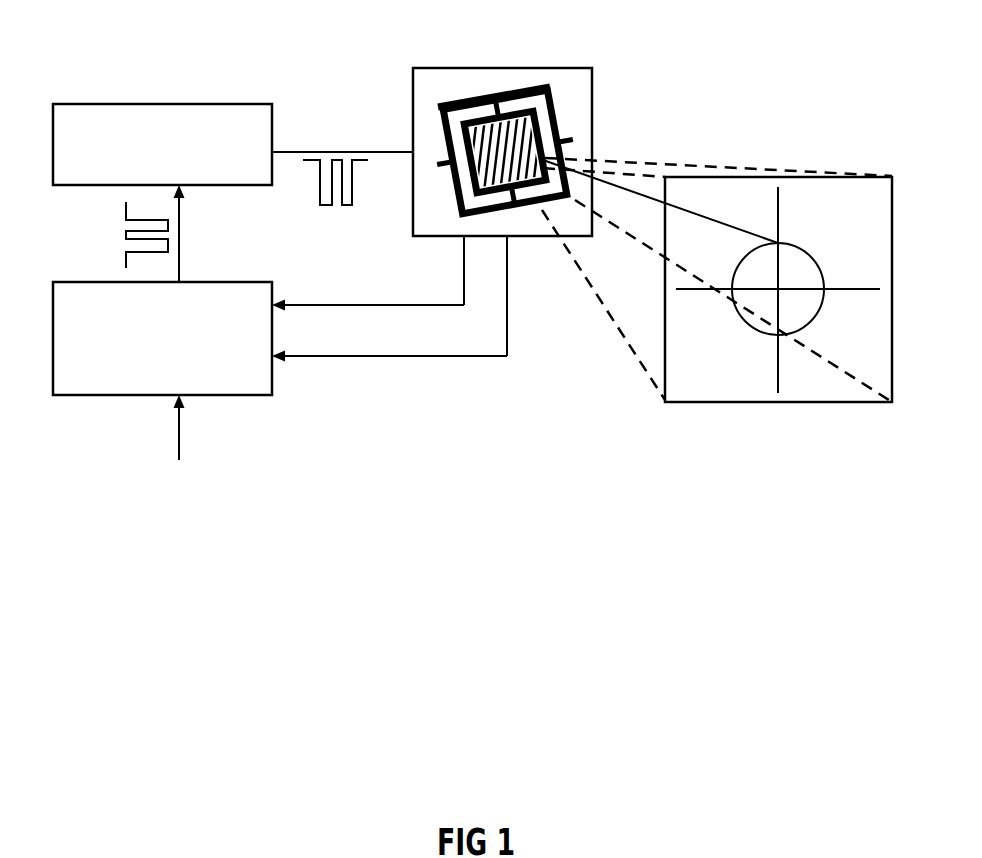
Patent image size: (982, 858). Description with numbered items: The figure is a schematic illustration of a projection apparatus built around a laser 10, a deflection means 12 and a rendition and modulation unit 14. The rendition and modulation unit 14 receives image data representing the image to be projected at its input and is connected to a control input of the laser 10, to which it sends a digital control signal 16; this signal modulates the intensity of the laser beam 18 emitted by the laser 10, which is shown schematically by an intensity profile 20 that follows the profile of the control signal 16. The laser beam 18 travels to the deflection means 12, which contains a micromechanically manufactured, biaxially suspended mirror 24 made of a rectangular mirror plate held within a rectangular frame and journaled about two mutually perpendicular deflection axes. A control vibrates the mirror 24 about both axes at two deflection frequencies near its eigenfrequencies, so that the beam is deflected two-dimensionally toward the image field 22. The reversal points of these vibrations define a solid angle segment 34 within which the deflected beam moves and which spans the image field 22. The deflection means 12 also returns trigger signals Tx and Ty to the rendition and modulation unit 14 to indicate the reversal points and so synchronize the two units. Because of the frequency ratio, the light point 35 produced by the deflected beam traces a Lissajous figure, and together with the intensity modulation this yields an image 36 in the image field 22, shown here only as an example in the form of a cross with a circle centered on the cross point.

The laser 10 is at (118, 104).
The deflection means 12 is at (425, 68).
The rendition and modulation unit 14 is at (100, 282).
The digital control signal 16 is at (125, 207).
The laser beam 18 is at (312, 152).
The intensity profile 20 is at (322, 205).
The image field 22 is at (840, 177).
The biaxially suspended mirror 24 is at (509, 82).
The solid angle segment 34 is at (608, 313).
The light point 35 is at (793, 245).
The image 36 is at (814, 332).